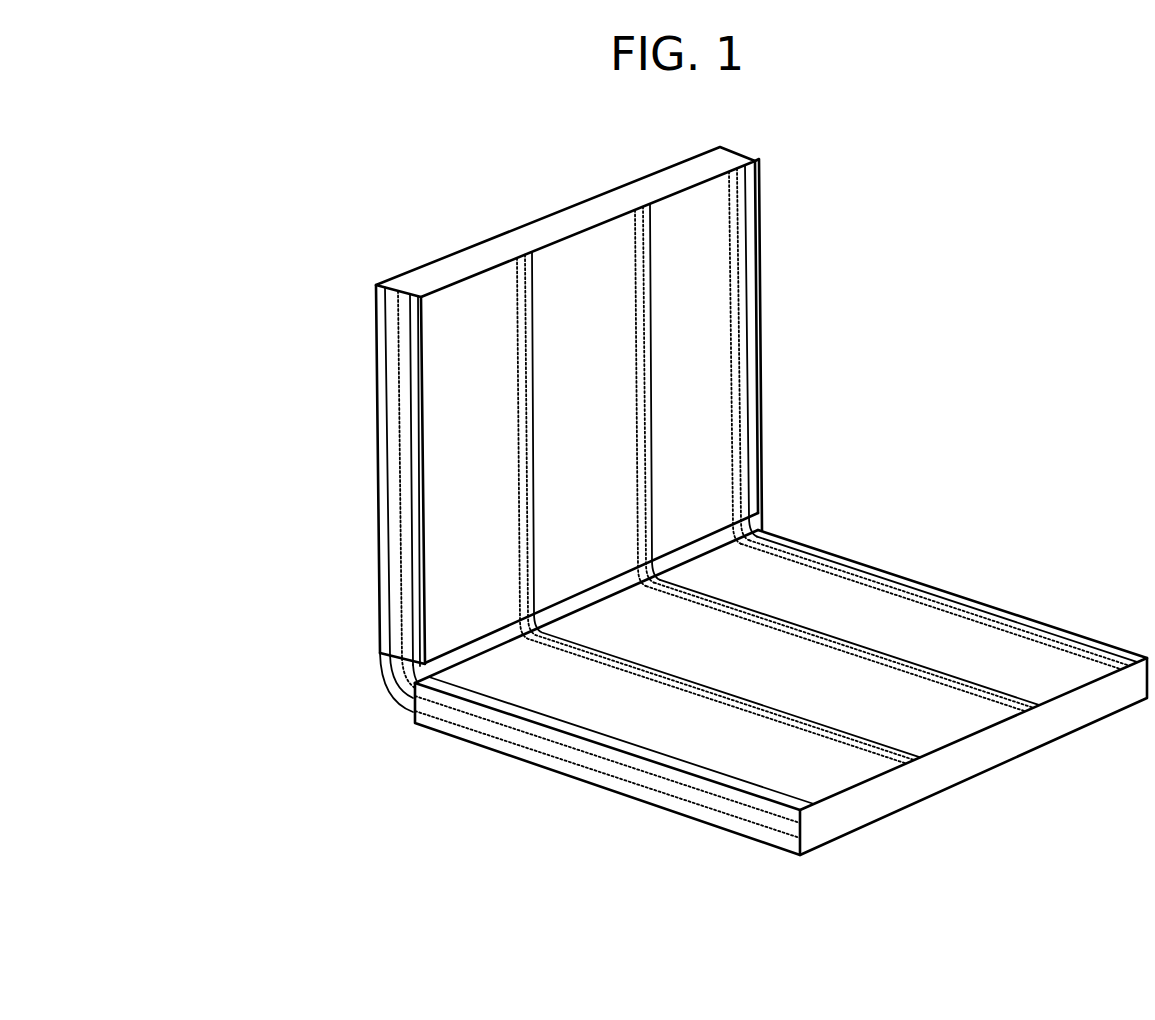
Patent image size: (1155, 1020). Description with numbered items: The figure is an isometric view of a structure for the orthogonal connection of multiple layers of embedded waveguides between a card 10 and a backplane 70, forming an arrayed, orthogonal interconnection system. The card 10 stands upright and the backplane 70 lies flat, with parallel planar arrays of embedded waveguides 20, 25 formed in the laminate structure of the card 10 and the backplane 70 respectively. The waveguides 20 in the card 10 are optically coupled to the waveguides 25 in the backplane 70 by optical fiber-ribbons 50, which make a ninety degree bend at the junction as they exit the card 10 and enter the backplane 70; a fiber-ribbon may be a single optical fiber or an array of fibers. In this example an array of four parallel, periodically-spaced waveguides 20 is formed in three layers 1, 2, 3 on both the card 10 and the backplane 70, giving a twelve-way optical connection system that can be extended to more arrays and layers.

The card 10 is at (280, 209).
The embedded waveguides 20 is at (422, 378).
The embedded waveguides 25 is at (820, 548).
The optical fiber-ribbons 50 is at (757, 517).
The backplane 70 is at (1010, 803).
The layer 1 is at (534, 448).
The layer 2 is at (527, 412).
The layer 3 is at (520, 488).